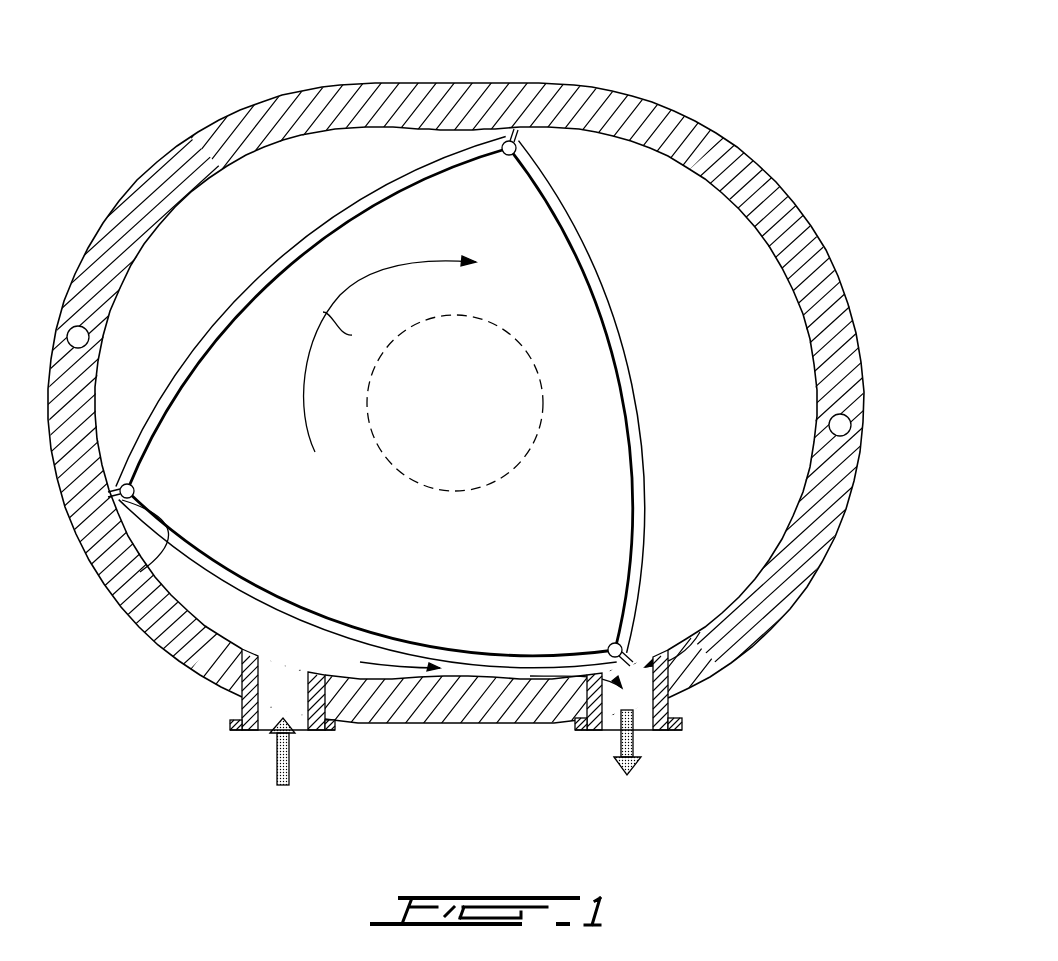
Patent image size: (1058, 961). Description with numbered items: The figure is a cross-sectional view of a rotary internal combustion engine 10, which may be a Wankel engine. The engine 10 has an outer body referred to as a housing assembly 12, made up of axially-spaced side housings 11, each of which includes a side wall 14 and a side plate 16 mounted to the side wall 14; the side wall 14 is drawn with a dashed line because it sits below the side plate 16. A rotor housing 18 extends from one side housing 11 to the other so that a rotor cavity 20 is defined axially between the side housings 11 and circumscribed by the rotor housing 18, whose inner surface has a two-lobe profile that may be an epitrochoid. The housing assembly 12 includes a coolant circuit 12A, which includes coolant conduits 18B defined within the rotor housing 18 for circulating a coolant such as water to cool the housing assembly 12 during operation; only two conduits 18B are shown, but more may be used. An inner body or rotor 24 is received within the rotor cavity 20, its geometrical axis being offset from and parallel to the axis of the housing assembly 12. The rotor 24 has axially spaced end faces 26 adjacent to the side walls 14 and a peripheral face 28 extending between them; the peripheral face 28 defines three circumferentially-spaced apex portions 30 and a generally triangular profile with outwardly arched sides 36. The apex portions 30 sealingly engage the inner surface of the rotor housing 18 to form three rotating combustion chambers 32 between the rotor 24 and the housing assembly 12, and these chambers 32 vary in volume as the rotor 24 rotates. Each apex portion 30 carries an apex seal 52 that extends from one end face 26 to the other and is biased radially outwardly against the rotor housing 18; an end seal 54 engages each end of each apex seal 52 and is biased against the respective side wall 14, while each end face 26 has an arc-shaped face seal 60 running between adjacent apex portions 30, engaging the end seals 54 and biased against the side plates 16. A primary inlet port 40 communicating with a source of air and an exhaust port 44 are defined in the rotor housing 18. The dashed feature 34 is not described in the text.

The rotary internal combustion engine 10 is at (529, 406).
The side housings 11 is at (662, 200).
The housing assembly 12 is at (529, 410).
The coolant circuit 12A is at (851, 425).
The side wall 14 is at (760, 335).
The side plate 16 is at (737, 277).
The rotor housing 18 is at (837, 373).
The coolant conduits 18B is at (75, 328).
The rotor cavity 20 is at (738, 478).
The rotor 24 is at (344, 348).
The end faces 26 is at (338, 347).
The peripheral face 28 is at (410, 170).
The apex portions 30 is at (670, 692).
The combustion chambers 32 is at (280, 210).
The intake port in end wall 34 is at (238, 598).
The outwardly arched sides 36 is at (240, 293).
The primary inlet port 40 is at (267, 717).
The exhaust port 44 is at (642, 717).
The apex seal 52 is at (110, 495).
The end seal 54 is at (122, 483).
The arc-shaped face seal 60 is at (147, 568).